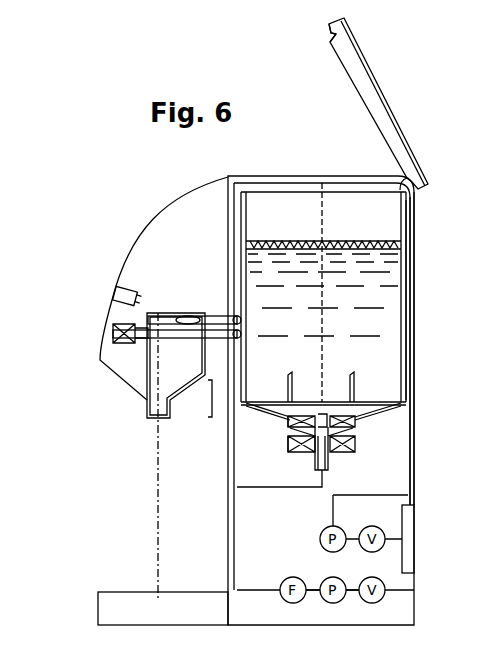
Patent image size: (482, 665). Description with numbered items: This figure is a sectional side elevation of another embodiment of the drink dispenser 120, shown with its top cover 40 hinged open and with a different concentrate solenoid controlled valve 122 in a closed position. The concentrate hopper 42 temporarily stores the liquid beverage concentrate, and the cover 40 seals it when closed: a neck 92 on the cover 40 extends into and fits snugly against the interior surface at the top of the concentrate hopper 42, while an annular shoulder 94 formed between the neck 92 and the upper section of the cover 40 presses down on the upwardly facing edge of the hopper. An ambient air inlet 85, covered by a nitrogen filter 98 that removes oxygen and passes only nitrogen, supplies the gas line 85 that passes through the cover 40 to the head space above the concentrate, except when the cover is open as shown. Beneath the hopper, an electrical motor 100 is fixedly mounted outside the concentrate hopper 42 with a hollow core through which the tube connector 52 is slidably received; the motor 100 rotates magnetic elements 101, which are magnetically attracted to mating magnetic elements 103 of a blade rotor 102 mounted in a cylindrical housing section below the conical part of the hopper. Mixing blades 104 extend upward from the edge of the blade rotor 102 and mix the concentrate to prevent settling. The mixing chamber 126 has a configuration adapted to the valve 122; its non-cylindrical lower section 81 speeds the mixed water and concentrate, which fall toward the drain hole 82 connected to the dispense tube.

The cover 40 is at (380, 95).
The concentrate hopper 42 is at (392, 322).
The tube connector 52 is at (330, 466).
The non-cylindrical lower section 81 is at (212, 420).
The drain hole 82 is at (150, 418).
The ambient air inlet 85 is at (415, 224).
The neck 92 is at (329, 40).
The annular shoulder 94 is at (328, 29).
The nitrogen filter 98 is at (415, 539).
The electrical motor 100 is at (357, 445).
The magnetic elements 101 is at (290, 438).
The blade rotor 102 is at (357, 422).
The magnetic elements 103 is at (290, 418).
The mixing blades 104 is at (358, 380).
The drink dispenser 120 is at (416, 283).
The concentrate solenoid controlled valve 122 is at (113, 326).
The mixing chamber 126 is at (147, 372).